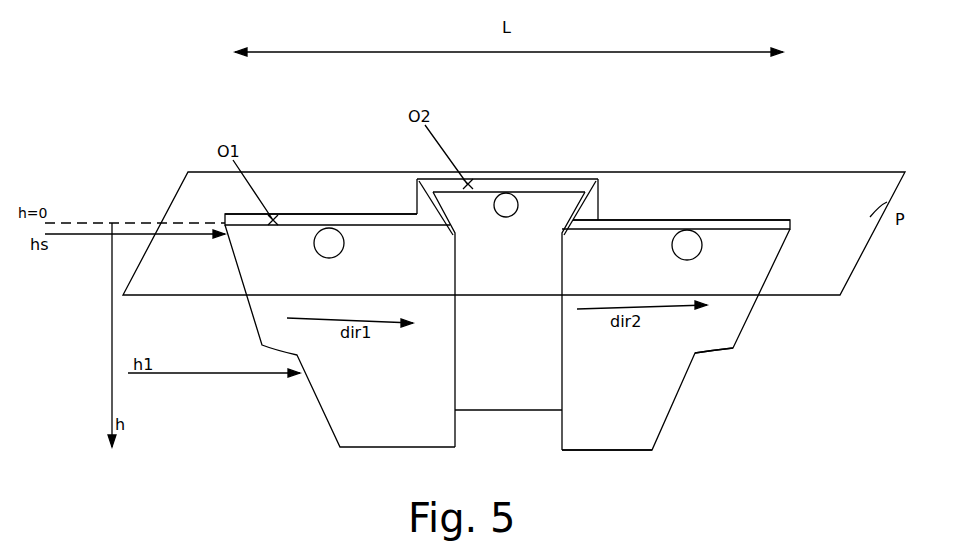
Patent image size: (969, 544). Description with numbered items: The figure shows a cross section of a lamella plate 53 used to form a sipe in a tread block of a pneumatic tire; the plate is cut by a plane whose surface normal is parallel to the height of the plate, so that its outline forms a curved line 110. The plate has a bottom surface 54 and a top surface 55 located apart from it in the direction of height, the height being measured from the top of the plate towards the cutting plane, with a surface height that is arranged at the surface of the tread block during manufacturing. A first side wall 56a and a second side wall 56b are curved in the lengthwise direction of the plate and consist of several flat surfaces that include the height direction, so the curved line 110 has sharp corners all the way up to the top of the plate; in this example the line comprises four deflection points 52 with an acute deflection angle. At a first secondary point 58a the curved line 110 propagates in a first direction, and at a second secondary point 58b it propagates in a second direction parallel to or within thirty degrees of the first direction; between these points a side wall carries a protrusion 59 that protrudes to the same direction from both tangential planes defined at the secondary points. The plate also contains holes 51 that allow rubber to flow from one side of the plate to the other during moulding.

The holes 51 is at (333, 228).
The deflection point 52 is at (600, 186).
The lamella plate 53 is at (687, 322).
The bottom surface 54 is at (768, 212).
The top surface 55 is at (702, 355).
The first side wall 56a is at (275, 303).
The second side wall 56b is at (416, 180).
The first secondary point 58a is at (313, 212).
The second secondary point 58b is at (685, 220).
The protrusion 59 is at (509, 180).
The curved line 110 is at (560, 183).